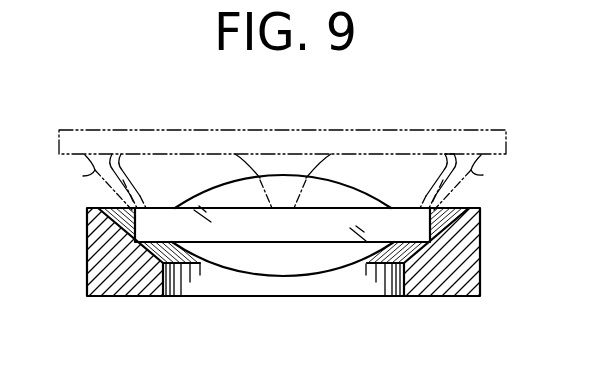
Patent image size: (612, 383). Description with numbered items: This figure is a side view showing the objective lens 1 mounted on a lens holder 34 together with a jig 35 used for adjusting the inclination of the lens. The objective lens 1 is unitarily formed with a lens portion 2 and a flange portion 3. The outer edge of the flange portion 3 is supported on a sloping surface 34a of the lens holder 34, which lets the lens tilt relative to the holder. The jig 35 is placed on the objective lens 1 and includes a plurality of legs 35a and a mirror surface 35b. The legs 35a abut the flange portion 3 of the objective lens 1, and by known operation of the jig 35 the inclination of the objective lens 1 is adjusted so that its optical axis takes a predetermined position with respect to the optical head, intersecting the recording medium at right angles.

The objective lens 1 is at (339, 172).
The lens portion 2 is at (200, 206).
The flange portion 3 is at (327, 234).
The lens holder 34 is at (480, 273).
The sloping surface 34a is at (462, 209).
The jig 35 is at (222, 124).
The legs 35a is at (60, 178).
The mirror surface 35b is at (456, 138).